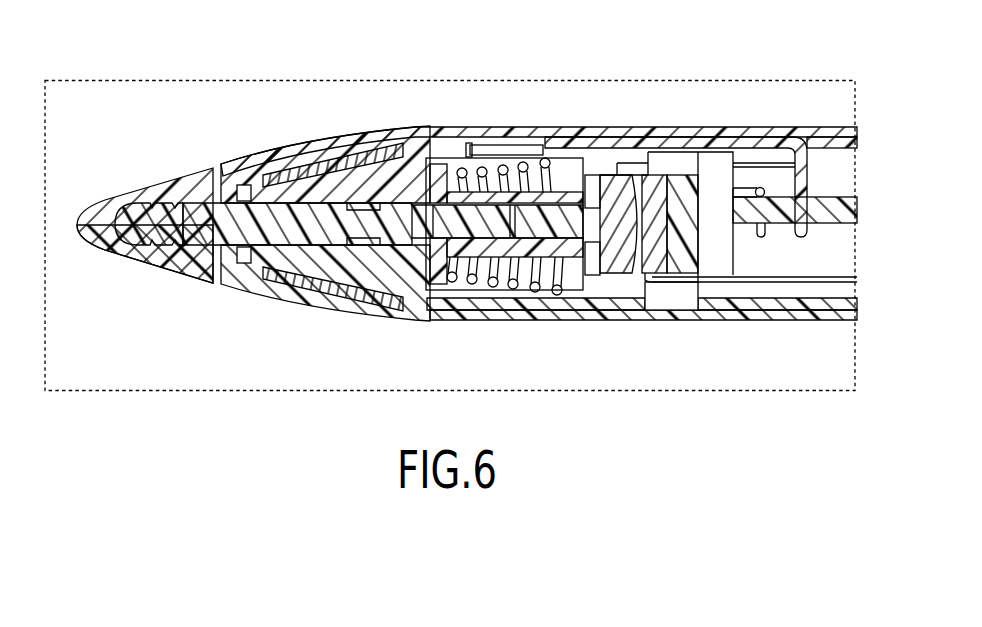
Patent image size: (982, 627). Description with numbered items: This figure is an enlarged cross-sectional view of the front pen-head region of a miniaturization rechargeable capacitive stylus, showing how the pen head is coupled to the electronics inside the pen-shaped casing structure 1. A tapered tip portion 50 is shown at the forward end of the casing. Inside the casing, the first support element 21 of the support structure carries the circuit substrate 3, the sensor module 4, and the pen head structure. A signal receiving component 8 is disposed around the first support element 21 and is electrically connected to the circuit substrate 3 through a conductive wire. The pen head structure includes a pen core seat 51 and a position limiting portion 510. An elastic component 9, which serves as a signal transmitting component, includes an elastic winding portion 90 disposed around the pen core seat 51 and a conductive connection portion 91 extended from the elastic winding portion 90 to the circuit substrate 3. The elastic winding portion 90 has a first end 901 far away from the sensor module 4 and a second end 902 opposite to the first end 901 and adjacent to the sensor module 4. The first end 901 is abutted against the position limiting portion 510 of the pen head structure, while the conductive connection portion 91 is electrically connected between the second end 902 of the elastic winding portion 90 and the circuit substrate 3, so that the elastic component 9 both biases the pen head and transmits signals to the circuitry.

The pen-shaped casing structure 1 is at (790, 128).
The circuit substrate 3 is at (840, 195).
The sensor module 4 is at (656, 252).
The signal receiving component 8 is at (318, 160).
The elastic component 9 is at (683, 38).
The first support element 21 is at (357, 278).
The nose cone 50 is at (103, 205).
The pen core seat 51 is at (492, 197).
The elastic winding portion 90 is at (584, 172).
The conductive connection portion 91 is at (677, 145).
The position limiting portion 510 is at (440, 172).
The first end 901 is at (452, 283).
The second end 902 is at (566, 178).